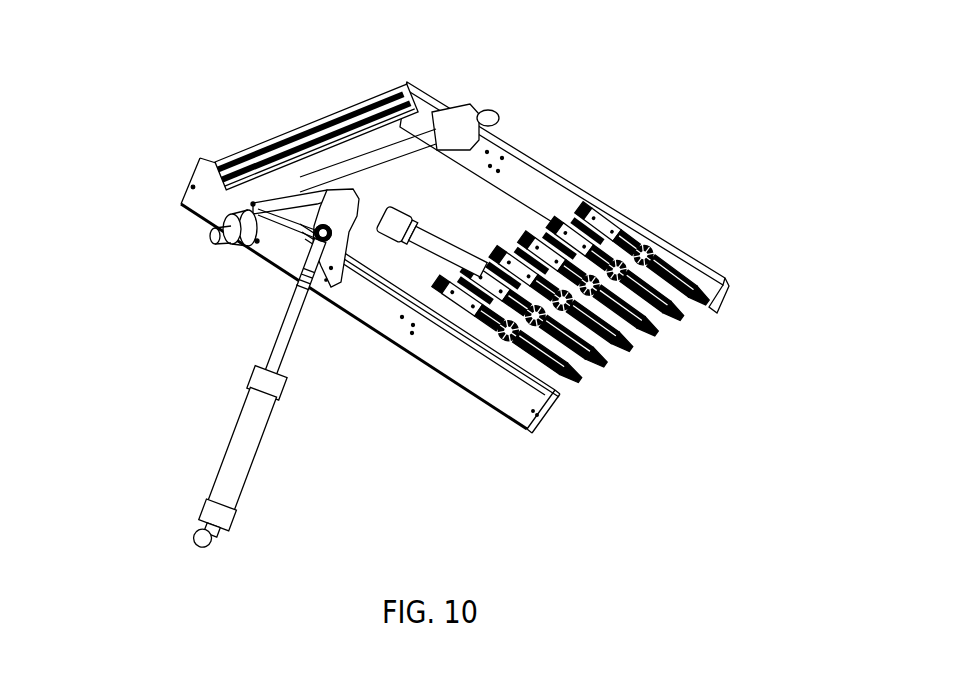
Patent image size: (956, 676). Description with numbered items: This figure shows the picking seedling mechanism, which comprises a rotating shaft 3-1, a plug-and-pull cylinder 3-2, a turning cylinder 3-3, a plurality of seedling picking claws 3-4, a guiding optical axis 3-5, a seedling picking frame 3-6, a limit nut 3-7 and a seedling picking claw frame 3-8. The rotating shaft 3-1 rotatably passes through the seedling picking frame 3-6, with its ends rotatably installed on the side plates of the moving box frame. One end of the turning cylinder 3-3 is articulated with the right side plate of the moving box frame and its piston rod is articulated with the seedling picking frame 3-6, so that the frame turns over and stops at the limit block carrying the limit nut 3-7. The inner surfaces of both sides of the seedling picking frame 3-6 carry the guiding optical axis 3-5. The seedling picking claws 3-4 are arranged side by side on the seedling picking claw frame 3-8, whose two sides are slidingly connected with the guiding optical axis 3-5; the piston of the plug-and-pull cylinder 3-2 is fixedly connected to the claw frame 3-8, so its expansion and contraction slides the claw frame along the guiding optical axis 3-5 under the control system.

The rotating shaft 3-1 is at (215, 233).
The plug-and-pull cylinder 3-2 is at (273, 276).
The turning cylinder 3-3 is at (253, 430).
The seedling picking claws 3-4 is at (480, 411).
The guiding optical axis 3-5 is at (606, 197).
The seedling picking frame 3-6 is at (423, 112).
The limit nut 3-7 is at (262, 170).
The seedling picking claw frame 3-8 is at (674, 218).